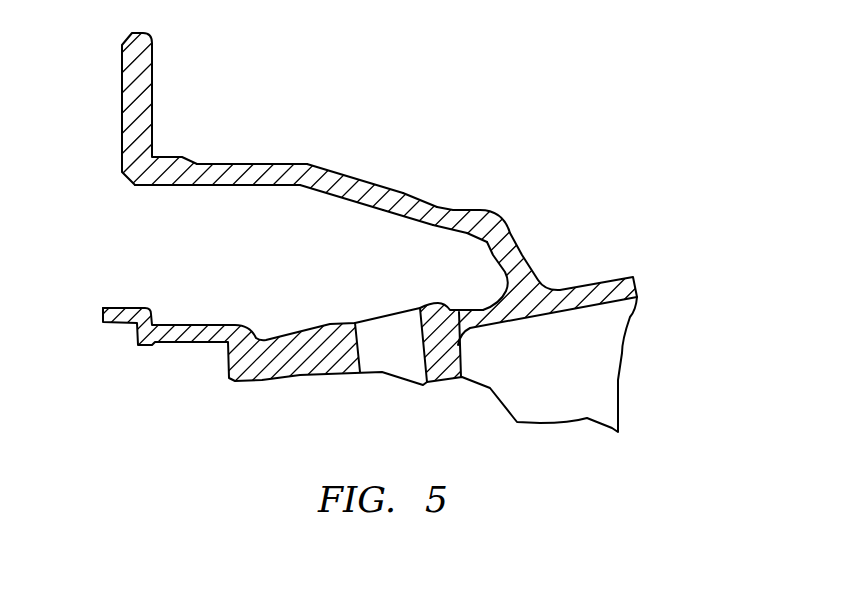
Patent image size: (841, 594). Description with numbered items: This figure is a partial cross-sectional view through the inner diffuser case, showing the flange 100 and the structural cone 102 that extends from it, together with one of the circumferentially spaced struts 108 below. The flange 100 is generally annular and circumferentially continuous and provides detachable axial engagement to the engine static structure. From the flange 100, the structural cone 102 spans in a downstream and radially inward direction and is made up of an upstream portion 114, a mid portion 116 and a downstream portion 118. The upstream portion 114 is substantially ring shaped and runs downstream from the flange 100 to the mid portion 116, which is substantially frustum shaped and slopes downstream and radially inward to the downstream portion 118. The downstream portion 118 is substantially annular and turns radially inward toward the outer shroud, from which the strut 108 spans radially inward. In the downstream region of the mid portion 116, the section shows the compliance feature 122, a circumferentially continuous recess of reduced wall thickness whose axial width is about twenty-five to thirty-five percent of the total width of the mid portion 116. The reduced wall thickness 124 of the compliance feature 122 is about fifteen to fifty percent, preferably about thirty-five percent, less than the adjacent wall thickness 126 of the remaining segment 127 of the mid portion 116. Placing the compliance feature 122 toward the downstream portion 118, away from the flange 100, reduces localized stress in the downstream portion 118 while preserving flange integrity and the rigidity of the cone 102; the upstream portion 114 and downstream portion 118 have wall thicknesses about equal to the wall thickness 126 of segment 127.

The flange 100 is at (153, 50).
The structural cone 102 is at (450, 126).
The strut 108 is at (607, 378).
The upstream portion 114 is at (225, 163).
The mid portion 116 is at (385, 208).
The downstream portion 118 is at (523, 248).
The compliance feature 122 is at (425, 260).
The wall thickness of the compliance feature 124 is at (457, 170).
The wall thickness 126 is at (348, 174).
The remaining segment 127 is at (385, 162).